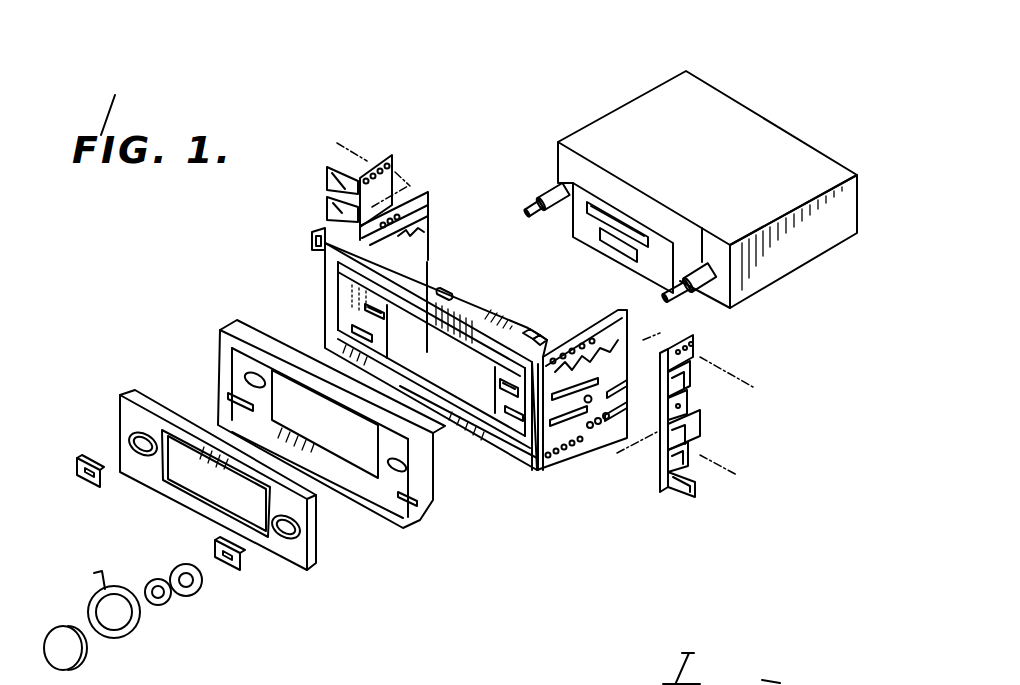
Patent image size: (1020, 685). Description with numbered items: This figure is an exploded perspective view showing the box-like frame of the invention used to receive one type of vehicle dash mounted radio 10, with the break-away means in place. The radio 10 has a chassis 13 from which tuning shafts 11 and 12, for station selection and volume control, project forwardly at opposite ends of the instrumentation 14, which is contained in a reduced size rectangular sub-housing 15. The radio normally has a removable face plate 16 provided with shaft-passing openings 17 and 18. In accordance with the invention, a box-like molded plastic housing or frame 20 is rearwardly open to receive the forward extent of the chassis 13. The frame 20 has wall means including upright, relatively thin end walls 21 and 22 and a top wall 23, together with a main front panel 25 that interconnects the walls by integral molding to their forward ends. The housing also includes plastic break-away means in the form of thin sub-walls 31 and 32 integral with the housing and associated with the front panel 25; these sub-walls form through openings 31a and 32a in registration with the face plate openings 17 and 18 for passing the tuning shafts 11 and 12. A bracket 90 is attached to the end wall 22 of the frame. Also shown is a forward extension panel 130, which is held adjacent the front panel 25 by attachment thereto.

The vehicle dash mounted radio 10 is at (607, 88).
The tuning shaft 11 is at (524, 209).
The tuning shaft 12 is at (670, 300).
The chassis 13 is at (782, 130).
The instrumentation 14 is at (566, 240).
The rectangular sub-housing 15 is at (640, 197).
The face plate 16 is at (173, 505).
The shaft-passing opening 17 is at (134, 438).
The shaft-passing opening 18 is at (285, 535).
The box-like housing or frame 20 is at (312, 272).
The end wall 21 is at (430, 228).
The end wall 22 is at (610, 413).
The top wall 23 is at (488, 312).
The main front panel 25 is at (507, 446).
The sub-wall 31 is at (345, 294).
The through opening 31a is at (366, 313).
The sub-wall 32 is at (506, 404).
The through opening 32a is at (508, 386).
The bracket 90 is at (390, 146).
The forward extension panel 130 is at (220, 354).